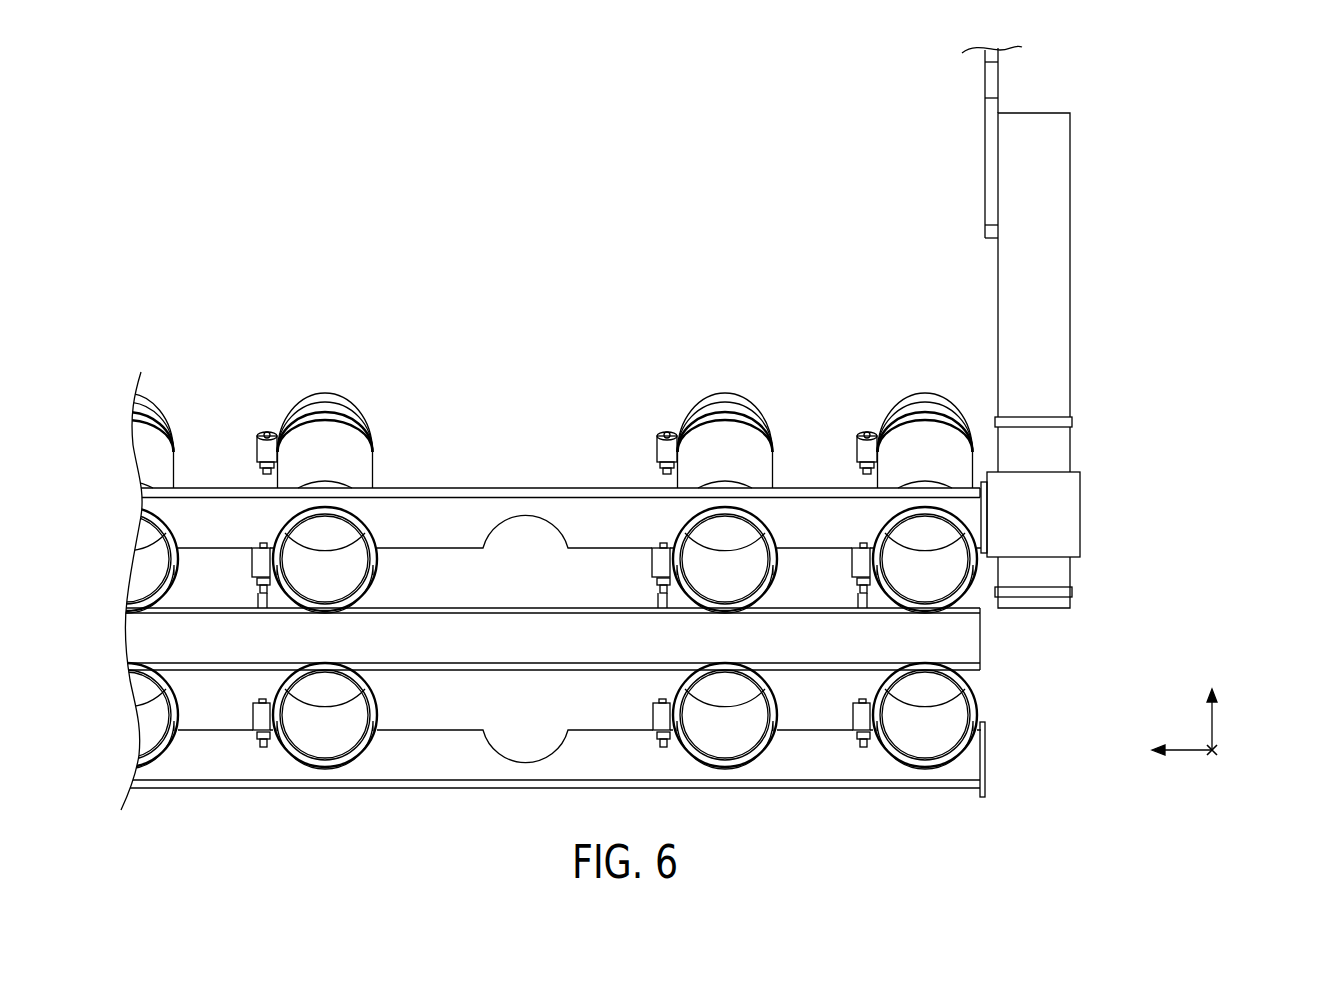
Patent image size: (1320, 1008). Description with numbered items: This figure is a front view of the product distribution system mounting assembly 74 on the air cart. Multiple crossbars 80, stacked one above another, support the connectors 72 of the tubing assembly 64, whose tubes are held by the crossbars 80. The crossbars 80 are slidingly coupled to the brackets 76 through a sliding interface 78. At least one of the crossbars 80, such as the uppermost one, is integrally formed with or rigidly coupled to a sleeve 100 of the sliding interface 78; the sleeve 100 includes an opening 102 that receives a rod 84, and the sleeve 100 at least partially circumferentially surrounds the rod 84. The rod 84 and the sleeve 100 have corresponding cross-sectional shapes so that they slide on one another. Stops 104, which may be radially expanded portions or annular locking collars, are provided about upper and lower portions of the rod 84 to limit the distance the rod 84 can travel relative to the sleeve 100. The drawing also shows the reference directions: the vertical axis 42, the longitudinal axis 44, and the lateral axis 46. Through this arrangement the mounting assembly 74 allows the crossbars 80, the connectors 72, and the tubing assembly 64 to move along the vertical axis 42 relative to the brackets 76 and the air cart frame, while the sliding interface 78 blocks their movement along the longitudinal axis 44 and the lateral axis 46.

The vertical axis or direction 42 is at (1212, 723).
The longitudinal axis or direction 44 is at (1215, 756).
The lateral axis or direction 46 is at (1187, 752).
The tubing assembly 64 is at (842, 414).
The connectors 72 is at (907, 395).
The product distribution system mounting assembly 74 is at (1083, 641).
The brackets 76 is at (990, 117).
The sliding interface 78 is at (1091, 491).
The crossbars 80 is at (975, 513).
The rod 84 is at (1055, 228).
The sleeve 100 is at (1082, 513).
The opening 102 is at (1060, 470).
The stops 104 is at (1072, 422).